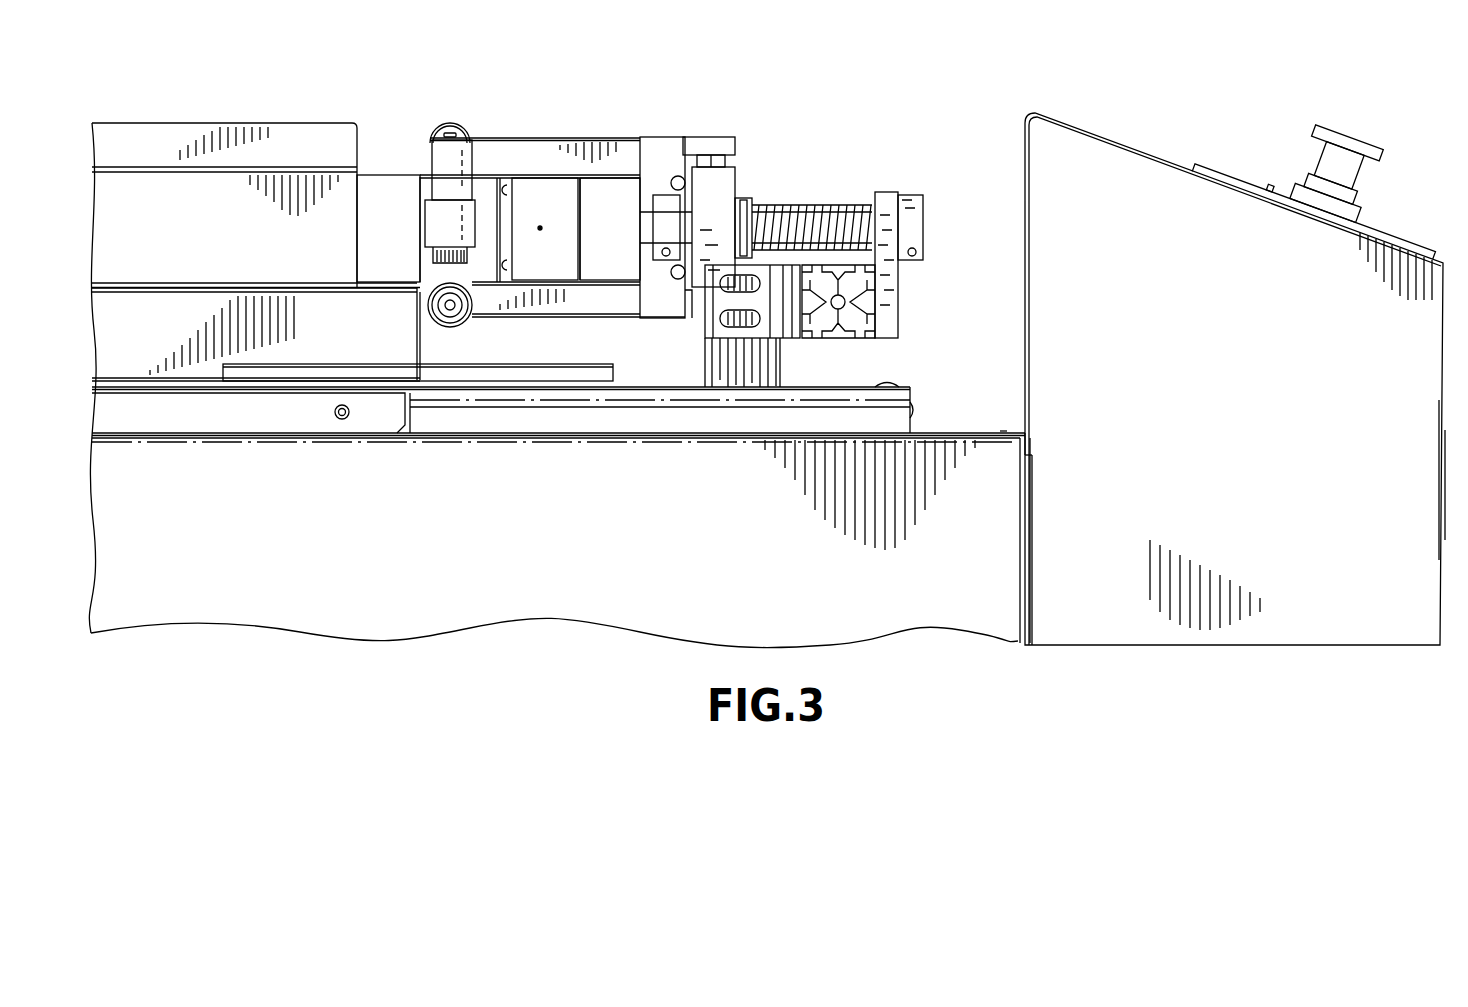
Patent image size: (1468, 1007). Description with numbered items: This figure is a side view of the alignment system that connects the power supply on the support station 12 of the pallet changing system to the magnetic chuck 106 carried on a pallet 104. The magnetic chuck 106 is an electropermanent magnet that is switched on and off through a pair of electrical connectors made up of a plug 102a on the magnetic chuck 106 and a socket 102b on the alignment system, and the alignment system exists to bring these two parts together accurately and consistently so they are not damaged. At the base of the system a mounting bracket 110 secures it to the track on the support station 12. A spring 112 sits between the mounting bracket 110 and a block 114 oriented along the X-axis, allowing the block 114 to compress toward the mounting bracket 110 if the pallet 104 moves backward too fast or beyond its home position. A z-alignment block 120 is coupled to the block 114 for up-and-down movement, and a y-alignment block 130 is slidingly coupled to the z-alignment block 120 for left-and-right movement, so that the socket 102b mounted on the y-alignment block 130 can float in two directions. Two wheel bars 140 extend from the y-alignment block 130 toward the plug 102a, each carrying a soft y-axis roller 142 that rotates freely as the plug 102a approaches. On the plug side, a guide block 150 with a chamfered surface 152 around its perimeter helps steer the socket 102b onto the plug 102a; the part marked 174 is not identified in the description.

The support station 12 is at (415, 605).
The plug 102a is at (393, 192).
The socket 102b is at (600, 197).
The pallet 104 is at (213, 355).
The magnetic chuck 106 is at (270, 210).
The mounting bracket 110 is at (887, 192).
The spring 112 is at (815, 205).
The block 114 is at (720, 185).
The z-alignment block 120 is at (710, 150).
The y-alignment block 130 is at (665, 150).
The wheel bar 140 is at (540, 143).
The y-axis roller 142 is at (448, 128).
The guide block 150 is at (485, 190).
The chamfered surface 152 is at (512, 178).
The adjustment knob 174 is at (440, 228).